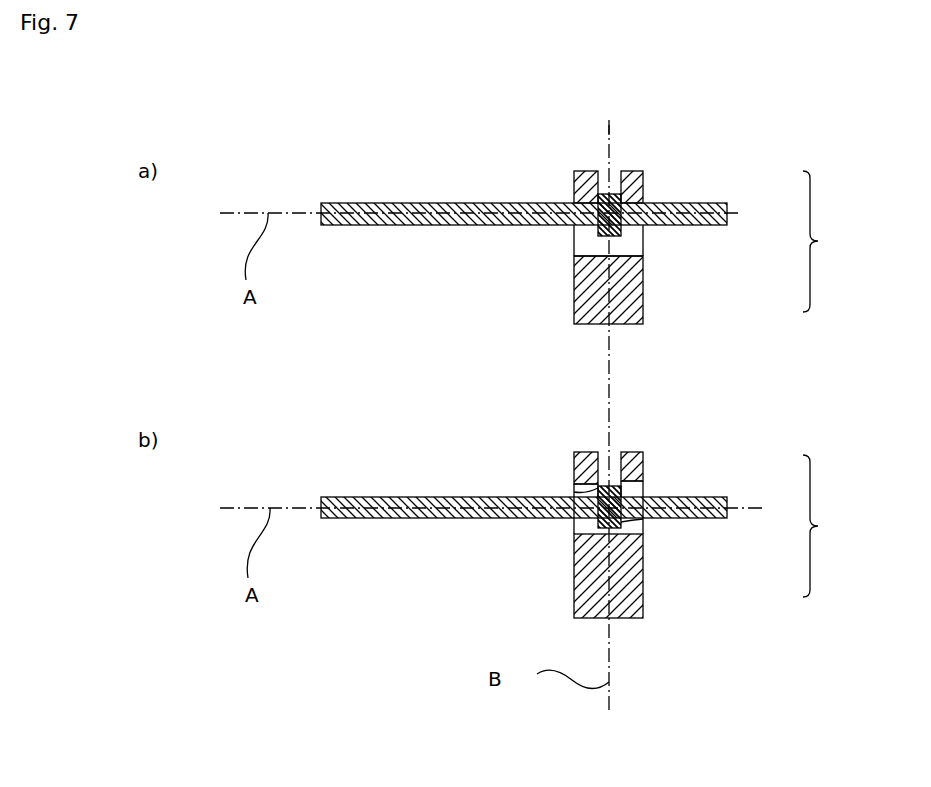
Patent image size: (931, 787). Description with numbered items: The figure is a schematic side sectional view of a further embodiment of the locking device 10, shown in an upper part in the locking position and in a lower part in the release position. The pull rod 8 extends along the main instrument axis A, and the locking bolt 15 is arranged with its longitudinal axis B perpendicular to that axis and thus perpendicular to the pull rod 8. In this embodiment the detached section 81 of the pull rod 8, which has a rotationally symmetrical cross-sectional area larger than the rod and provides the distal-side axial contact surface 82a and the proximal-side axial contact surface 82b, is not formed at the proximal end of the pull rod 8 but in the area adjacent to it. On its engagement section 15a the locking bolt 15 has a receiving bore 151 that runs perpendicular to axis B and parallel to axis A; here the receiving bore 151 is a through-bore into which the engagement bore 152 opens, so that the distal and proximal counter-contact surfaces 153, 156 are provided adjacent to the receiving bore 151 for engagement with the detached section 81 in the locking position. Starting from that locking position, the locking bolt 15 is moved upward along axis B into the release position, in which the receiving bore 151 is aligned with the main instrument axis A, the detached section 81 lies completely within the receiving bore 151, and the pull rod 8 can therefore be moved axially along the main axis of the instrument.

The pull rod 8 is at (468, 192).
The locking device 10 is at (645, 138).
The locking bolt 15 is at (572, 304).
The engagement section 15a is at (838, 384).
The receiving bore 151 is at (633, 243).
The engagement bore 152 is at (608, 180).
The distal counter-contact surface 153 is at (574, 483).
The proximal counter-contact surface 156 is at (643, 479).
The detached section 81 is at (597, 523).
The distal-side axial contact surface 82a is at (597, 490).
The proximal-side axial contact surface 82b is at (643, 519).